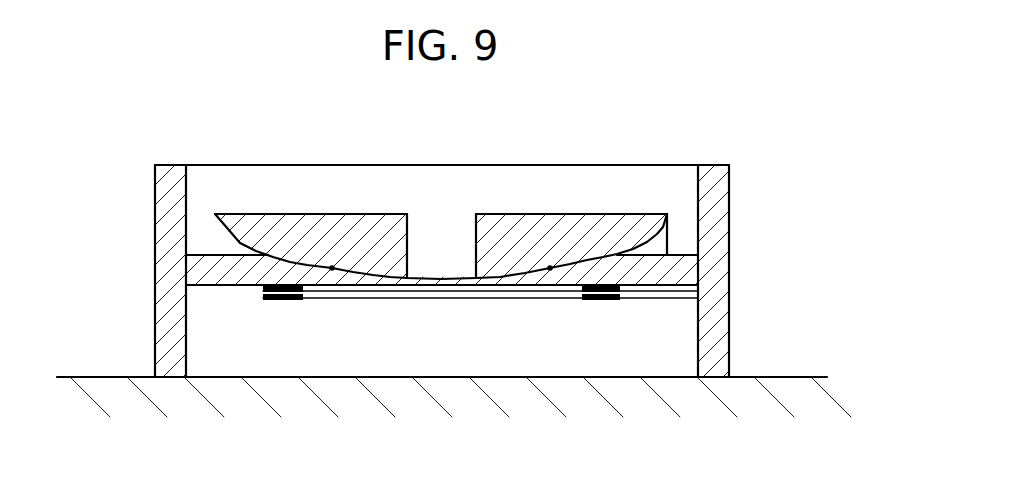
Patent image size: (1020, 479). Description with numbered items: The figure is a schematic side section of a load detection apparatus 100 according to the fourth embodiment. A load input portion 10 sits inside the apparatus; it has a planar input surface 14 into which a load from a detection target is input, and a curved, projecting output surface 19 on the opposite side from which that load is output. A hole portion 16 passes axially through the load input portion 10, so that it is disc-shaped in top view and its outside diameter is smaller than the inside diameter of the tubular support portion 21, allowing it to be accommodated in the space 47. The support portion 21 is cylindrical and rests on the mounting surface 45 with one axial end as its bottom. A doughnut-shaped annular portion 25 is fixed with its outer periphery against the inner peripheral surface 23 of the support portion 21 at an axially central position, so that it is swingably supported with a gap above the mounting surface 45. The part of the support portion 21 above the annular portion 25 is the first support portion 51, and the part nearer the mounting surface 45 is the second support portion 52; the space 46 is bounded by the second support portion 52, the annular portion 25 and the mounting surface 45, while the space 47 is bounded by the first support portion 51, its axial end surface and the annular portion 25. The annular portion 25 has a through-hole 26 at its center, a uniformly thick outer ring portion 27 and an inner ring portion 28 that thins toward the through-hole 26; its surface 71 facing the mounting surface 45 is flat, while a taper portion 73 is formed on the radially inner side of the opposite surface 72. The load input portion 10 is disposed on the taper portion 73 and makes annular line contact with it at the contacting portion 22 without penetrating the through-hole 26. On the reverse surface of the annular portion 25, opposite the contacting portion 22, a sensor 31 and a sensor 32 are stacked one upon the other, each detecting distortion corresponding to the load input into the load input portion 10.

The load detection apparatus 100 is at (187, 136).
The load input portion 10 is at (613, 210).
The input surface 14 is at (300, 216).
The hole portion 16 is at (472, 245).
The output surface 19 is at (660, 242).
The support portion 21 is at (732, 345).
The contacting portion 22 is at (331, 266).
The inner peripheral surface 23 is at (190, 328).
The annular portion 25 is at (729, 268).
The through-hole 26 is at (393, 299).
The outer ring portion 27 is at (197, 290).
The inner ring portion 28 is at (308, 300).
The sensor (first sensor) 31 is at (622, 292).
The sensor (second sensor) 32 is at (583, 295).
The mounting surface 45 is at (777, 377).
The space 46 is at (580, 331).
The space 47 is at (442, 210).
The first support portion 51 is at (155, 188).
The second support portion 52 is at (155, 316).
The surface 71 is at (242, 288).
The surface 72 is at (683, 247).
The taper portion 73 is at (360, 270).